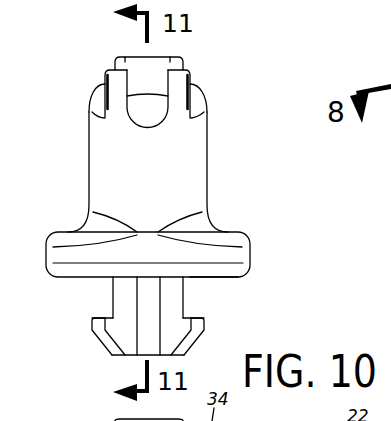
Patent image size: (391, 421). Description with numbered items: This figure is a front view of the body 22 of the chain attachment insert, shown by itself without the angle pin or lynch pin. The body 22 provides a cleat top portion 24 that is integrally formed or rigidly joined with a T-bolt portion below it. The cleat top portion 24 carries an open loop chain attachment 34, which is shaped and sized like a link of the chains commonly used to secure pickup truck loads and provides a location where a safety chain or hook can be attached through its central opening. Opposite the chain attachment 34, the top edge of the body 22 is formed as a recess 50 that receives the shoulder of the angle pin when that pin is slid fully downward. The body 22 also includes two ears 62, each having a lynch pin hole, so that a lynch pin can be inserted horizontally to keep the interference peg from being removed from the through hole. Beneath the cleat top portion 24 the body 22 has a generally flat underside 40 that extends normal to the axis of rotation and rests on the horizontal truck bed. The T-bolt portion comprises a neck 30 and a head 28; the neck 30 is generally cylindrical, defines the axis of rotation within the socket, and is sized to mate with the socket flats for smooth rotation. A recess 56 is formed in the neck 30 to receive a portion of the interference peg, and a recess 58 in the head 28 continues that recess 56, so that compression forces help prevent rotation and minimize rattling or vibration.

The body 22 is at (157, 216).
The cleat top portion 24 is at (173, 177).
The head 28 is at (120, 328).
The neck 30 is at (117, 293).
The open loop chain attachment 34 is at (152, 62).
The flat underside 40 is at (212, 279).
The recess 50 is at (150, 128).
The recess 56 is at (143, 301).
The recess 58 is at (147, 345).
The ears 62 is at (117, 88).